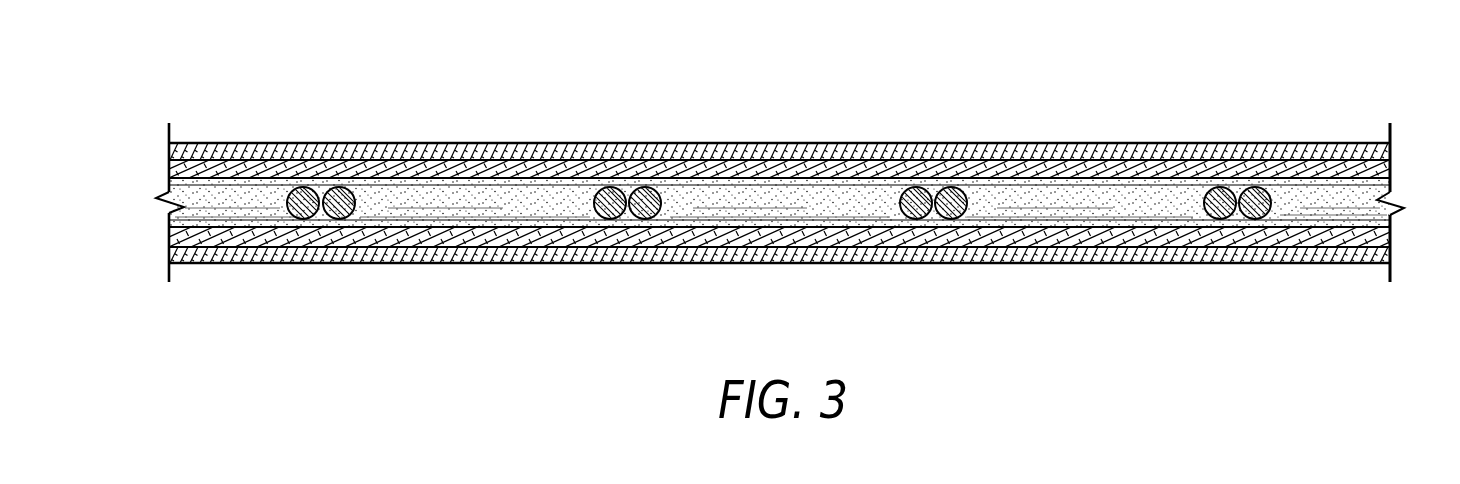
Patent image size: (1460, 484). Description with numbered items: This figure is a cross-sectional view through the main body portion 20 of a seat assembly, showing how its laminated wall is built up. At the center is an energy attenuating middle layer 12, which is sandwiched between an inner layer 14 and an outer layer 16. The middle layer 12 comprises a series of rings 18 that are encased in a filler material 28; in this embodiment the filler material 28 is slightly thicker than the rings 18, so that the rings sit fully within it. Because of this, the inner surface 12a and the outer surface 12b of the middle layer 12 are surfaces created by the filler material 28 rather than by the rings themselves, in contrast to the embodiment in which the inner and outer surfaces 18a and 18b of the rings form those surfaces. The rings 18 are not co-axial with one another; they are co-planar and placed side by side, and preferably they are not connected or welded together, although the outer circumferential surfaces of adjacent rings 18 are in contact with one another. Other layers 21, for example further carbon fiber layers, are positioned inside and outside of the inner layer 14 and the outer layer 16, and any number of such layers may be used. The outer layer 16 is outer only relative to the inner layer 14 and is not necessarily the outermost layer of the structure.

The middle layer 12 is at (149, 190).
The inner surface 12a is at (722, 178).
The outer surface 12b is at (737, 232).
The inner layer 14 is at (1197, 168).
The outer layer 16 is at (1358, 240).
The rings 18 is at (460, 202).
The inner surface of the rings 18a is at (503, 188).
The outer surface of the rings 18b is at (505, 220).
The main body portion 20 is at (1420, 152).
The other layers 21 is at (417, 250).
The filler material 28 is at (578, 185).